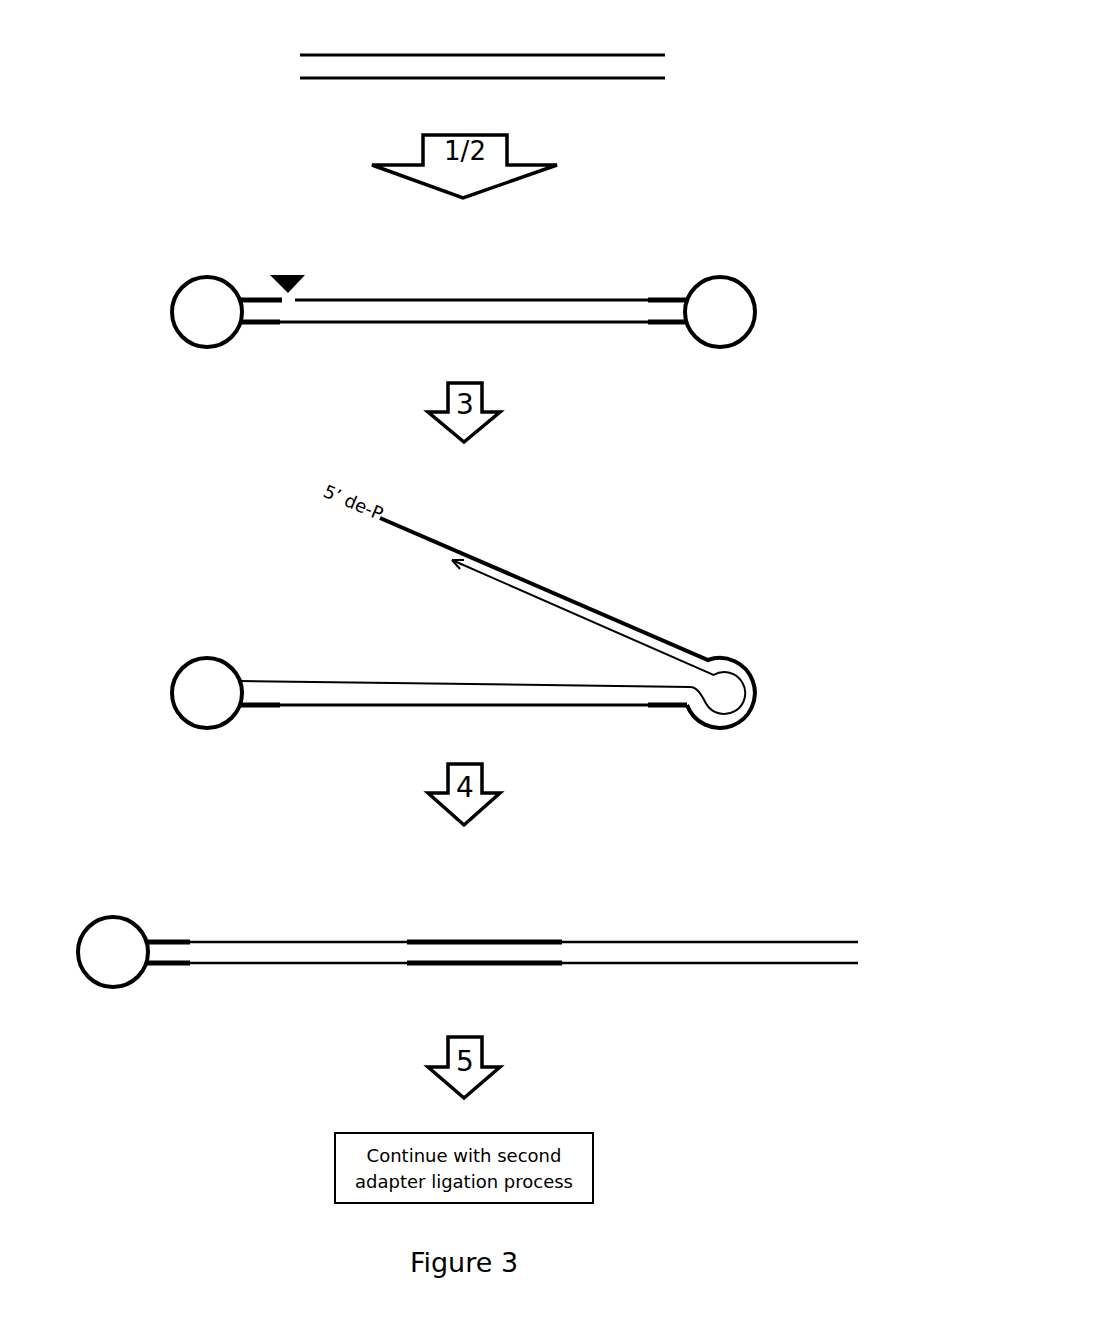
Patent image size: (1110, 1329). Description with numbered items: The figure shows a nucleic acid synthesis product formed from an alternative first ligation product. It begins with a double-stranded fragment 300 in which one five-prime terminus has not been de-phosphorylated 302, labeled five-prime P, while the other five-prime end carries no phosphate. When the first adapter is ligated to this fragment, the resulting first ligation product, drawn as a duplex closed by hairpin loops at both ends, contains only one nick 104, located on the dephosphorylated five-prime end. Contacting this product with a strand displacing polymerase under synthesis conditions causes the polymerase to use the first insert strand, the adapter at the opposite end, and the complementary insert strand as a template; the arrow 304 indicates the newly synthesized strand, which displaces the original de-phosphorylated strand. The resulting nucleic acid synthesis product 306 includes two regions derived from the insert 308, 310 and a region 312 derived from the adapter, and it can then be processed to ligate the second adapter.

The fragment 300 is at (232, 40).
The non-de-phosphorylated 5' terminus 302 is at (714, 62).
The nick 104 is at (288, 269).
The newly synthesized strand 304 is at (496, 591).
The nucleic acid synthesis product 306 is at (467, 948).
The insert-derived region 308 is at (193, 975).
The insert-derived region 310 is at (562, 975).
The adapter-derived region 312 is at (407, 922).